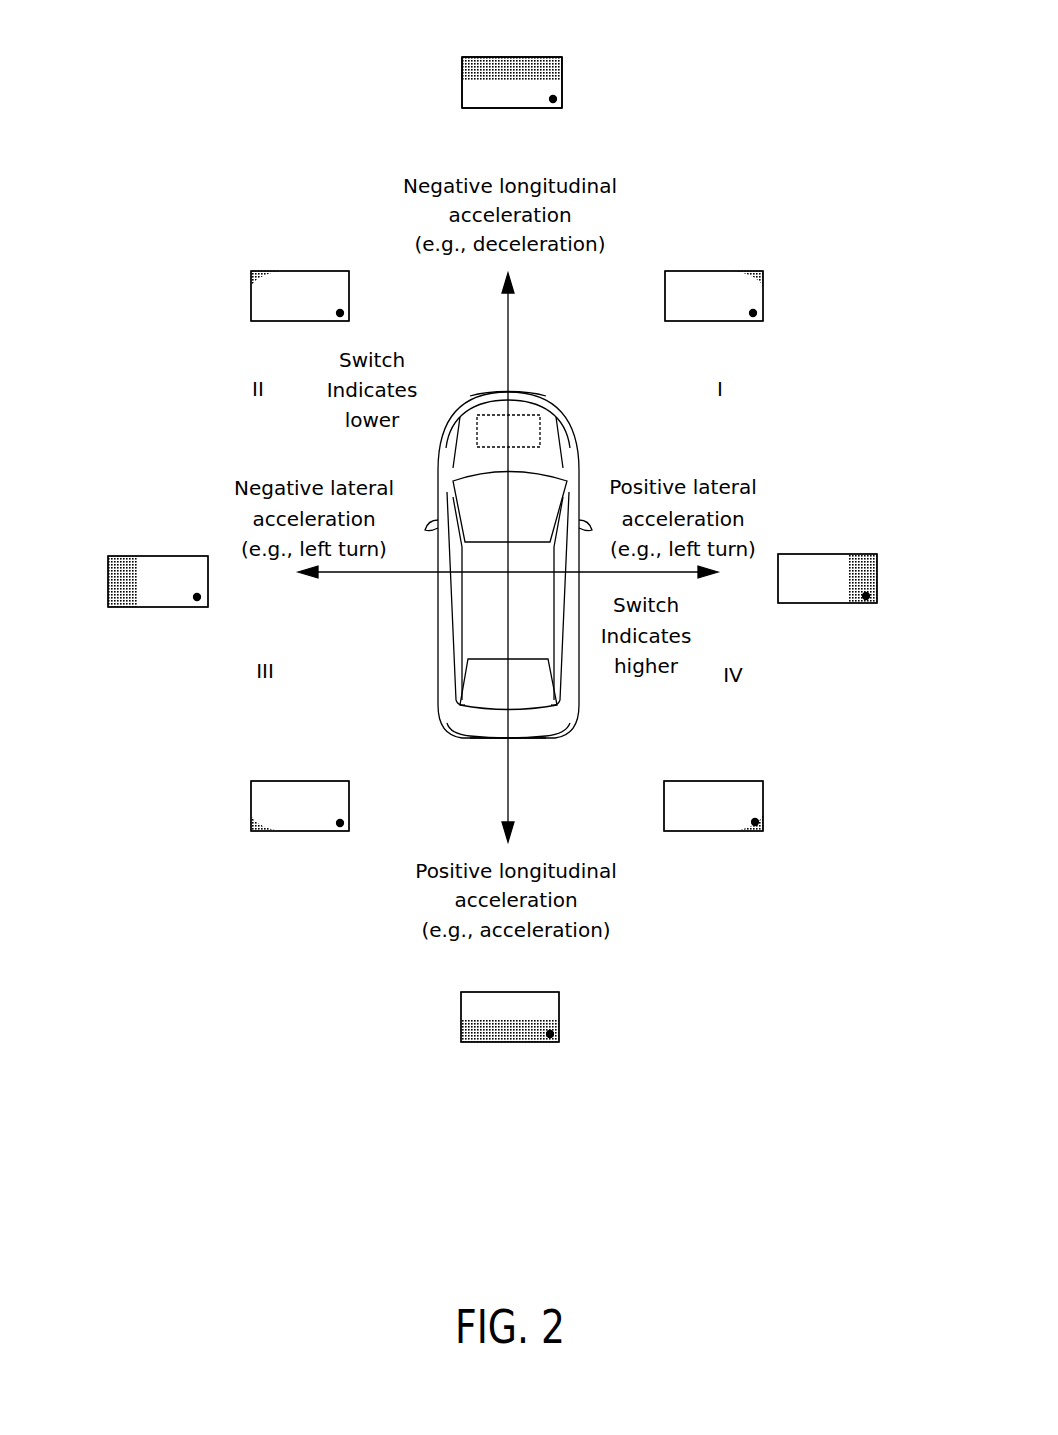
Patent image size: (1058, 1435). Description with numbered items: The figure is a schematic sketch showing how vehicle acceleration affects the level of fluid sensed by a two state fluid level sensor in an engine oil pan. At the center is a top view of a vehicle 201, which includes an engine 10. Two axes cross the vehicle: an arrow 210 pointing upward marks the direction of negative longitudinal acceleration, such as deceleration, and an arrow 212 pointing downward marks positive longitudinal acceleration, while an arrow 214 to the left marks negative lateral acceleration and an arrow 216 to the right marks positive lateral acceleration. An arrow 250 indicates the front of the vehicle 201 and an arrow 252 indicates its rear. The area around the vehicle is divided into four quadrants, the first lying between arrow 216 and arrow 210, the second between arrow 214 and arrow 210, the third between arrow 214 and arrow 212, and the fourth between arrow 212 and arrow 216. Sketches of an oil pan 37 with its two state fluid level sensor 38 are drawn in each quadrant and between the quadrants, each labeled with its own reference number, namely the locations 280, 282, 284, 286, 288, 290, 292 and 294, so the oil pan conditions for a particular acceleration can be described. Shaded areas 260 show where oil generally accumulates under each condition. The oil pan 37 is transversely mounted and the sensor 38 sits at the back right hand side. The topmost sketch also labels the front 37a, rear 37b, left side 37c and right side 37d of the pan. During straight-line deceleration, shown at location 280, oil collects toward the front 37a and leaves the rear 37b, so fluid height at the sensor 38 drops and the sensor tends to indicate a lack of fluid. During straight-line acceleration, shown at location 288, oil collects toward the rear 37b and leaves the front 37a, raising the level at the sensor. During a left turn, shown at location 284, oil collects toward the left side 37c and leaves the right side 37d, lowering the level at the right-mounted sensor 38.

The engine 10 is at (508, 431).
The oil pan 37 is at (522, 57).
The front of oil pan 37a is at (504, 40).
The rear of oil pan 37b is at (511, 117).
The left side of oil pan 37c is at (454, 93).
The right side of oil pan 37d is at (573, 62).
The two state fluid level sensor 38 is at (557, 98).
The vehicle 201 is at (578, 438).
The arrow indicating negative longitudinal acceleration 210 is at (510, 332).
The arrow indicating positive longitudinal acceleration 212 is at (510, 798).
The arrow indicating negative lateral acceleration 214 is at (334, 576).
The arrow indicating positive lateral acceleration 216 is at (685, 576).
The arrow indicating front of vehicle 250 is at (527, 380).
The arrow indicating rear of vehicle 252 is at (498, 742).
The shaded areas 260 is at (492, 72).
The oil pan location for straight-line deceleration 280 is at (487, 42).
The oil pan location in second quadrant 282 is at (287, 255).
The oil pan location for left turn 284 is at (132, 537).
The oil pan location in third quadrant 286 is at (287, 763).
The oil pan location for straight-line acceleration 288 is at (483, 980).
The oil pan location in fourth quadrant 290 is at (680, 763).
The oil pan location for positive lateral acceleration 292 is at (827, 538).
The oil pan location in first quadrant 294 is at (702, 256).